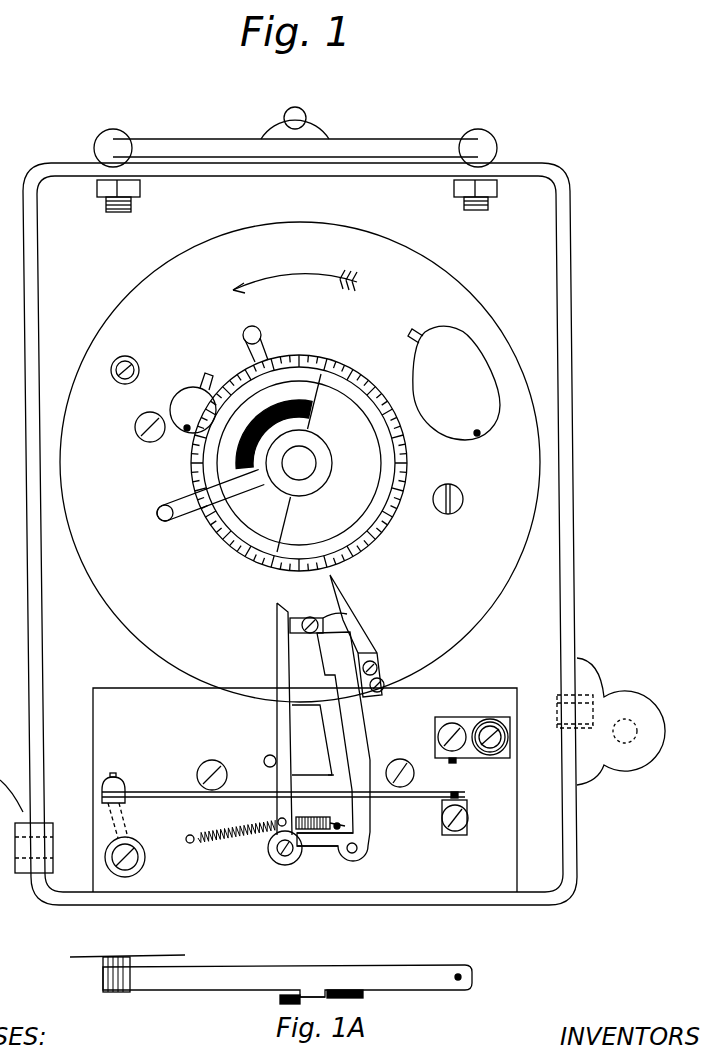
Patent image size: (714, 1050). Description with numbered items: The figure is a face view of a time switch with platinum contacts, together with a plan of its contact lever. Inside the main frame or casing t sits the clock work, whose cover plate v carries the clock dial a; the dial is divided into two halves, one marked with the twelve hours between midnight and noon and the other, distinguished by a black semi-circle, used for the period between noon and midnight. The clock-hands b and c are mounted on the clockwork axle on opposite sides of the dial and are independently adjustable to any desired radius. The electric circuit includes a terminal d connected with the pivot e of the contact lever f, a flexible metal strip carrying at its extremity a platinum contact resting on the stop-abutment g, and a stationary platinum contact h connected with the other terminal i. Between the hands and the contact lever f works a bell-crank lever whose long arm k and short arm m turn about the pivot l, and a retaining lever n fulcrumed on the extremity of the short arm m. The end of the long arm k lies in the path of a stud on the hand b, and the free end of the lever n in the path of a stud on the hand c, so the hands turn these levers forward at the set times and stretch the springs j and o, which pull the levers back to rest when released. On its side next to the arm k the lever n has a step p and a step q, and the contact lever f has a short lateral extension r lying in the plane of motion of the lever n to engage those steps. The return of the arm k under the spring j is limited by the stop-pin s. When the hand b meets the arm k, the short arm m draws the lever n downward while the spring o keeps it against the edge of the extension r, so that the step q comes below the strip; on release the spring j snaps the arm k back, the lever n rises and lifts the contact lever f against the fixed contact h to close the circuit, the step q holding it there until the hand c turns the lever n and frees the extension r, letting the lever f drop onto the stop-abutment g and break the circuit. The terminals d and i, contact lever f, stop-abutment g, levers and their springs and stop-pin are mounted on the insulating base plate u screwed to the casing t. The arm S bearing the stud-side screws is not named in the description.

In FIG. 1, the main frame or casing t is at (567, 246).
In FIG. 1, the cover plate v is at (483, 583).
In FIG. 1, the clock dial a is at (347, 366).
In FIG. 1, the clock-hand b is at (190, 512).
In FIG. 1, the clock-hand c is at (258, 350).
In FIG. 1, the striking arm S is at (343, 583).
In FIG. 1, the retaining lever n is at (338, 727).
In FIG. 1A, the retaining lever n is at (363, 995).
In FIG. 1, the short arm of bell-crank lever m is at (318, 848).
In FIG. 1, the long arm of bell-crank lever k is at (282, 645).
In FIG. 1A, the long arm of bell-crank lever k is at (282, 1000).
In FIG. 1, the pivot l is at (287, 870).
In FIG. 1, the shoulder or step q is at (327, 768).
In FIG. 1, the lateral extension or widened part r is at (314, 757).
In FIG. 1A, the lateral extension or widened part r is at (320, 990).
In FIG. 1, the base plate u is at (120, 700).
In FIG. 1, the contact lever f is at (414, 802).
In FIG. 1A, the contact lever f is at (415, 976).
In FIG. 1, the pivot of contact lever e is at (120, 777).
In FIG. 1A, the pivot of contact lever e is at (103, 980).
In FIG. 1, the terminal d is at (137, 877).
In FIG. 1, the stop-pin s is at (265, 757).
In FIG. 1, the spring j is at (232, 840).
In FIG. 1, the spring o is at (313, 809).
In FIG. 1, the shoulder or step p is at (340, 818).
In FIG. 1, the terminal i is at (510, 735).
In FIG. 1, the stationary platinum contact h is at (458, 763).
In FIG. 1, the stop-abutment g is at (464, 816).